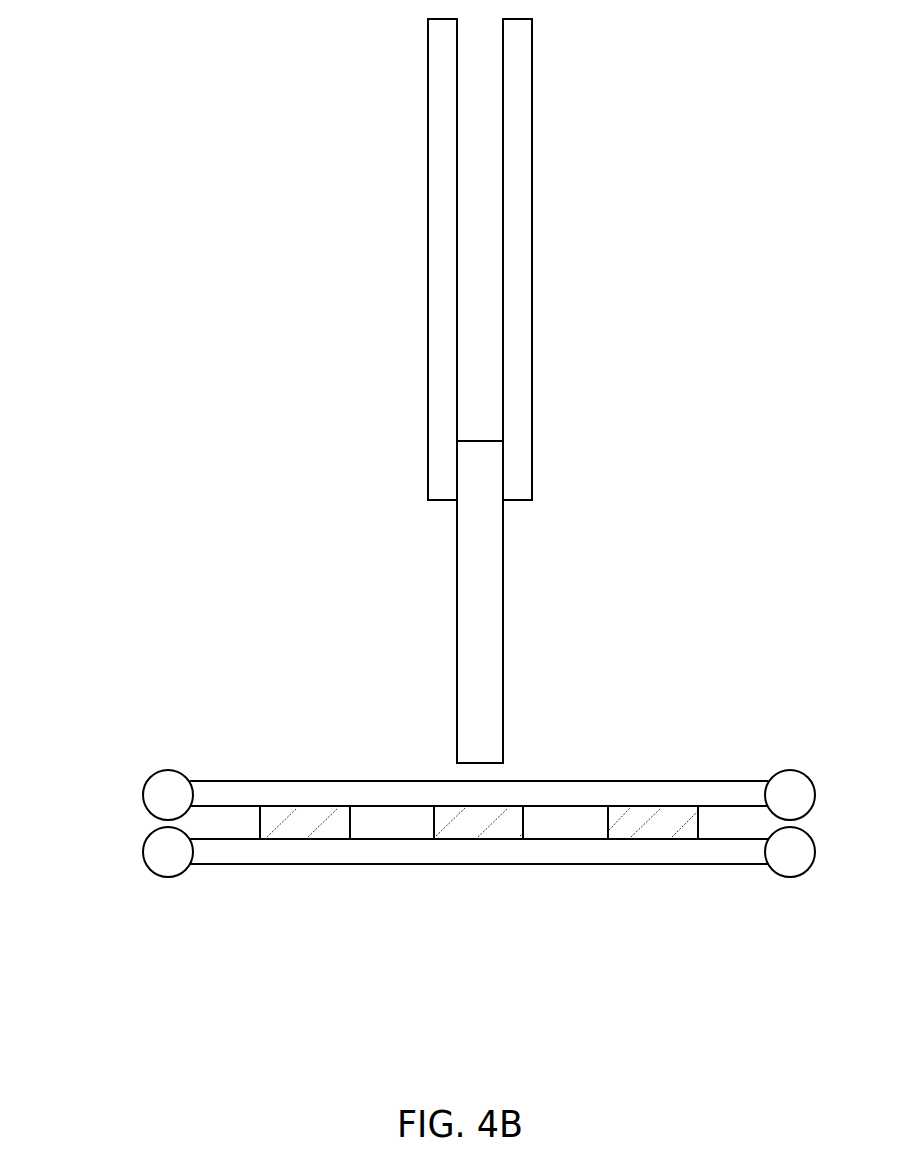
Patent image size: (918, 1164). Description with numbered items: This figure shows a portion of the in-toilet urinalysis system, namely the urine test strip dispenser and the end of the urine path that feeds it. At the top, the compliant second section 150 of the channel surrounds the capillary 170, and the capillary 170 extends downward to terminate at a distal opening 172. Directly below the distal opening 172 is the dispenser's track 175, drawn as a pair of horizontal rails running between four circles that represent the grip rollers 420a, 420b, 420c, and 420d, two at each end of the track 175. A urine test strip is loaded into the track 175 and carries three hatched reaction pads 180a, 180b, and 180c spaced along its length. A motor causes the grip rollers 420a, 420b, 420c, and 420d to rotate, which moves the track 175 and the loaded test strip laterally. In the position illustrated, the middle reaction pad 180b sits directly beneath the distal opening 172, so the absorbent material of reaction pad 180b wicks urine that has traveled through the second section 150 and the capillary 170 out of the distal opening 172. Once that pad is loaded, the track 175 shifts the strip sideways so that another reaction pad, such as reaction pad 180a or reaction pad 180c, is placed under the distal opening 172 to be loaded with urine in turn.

The second section of the channel 150 is at (440, 198).
The capillary 170 is at (503, 553).
The distal opening 172 is at (487, 761).
The track 175 is at (118, 762).
The grip roller 420a is at (166, 770).
The grip roller 420b is at (165, 877).
The grip roller 420c is at (789, 770).
The grip roller 420d is at (787, 877).
The reaction pad 180a is at (305, 833).
The reaction pad 180b is at (484, 832).
The reaction pad 180c is at (652, 830).